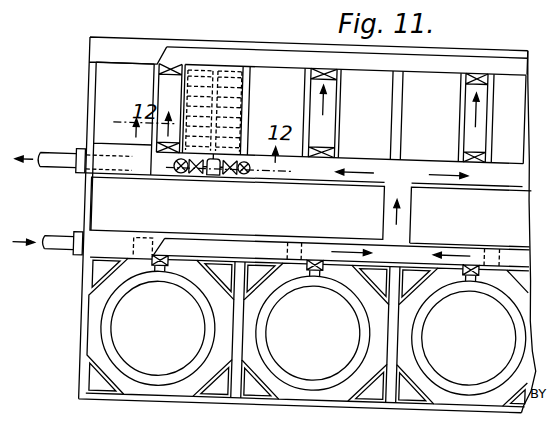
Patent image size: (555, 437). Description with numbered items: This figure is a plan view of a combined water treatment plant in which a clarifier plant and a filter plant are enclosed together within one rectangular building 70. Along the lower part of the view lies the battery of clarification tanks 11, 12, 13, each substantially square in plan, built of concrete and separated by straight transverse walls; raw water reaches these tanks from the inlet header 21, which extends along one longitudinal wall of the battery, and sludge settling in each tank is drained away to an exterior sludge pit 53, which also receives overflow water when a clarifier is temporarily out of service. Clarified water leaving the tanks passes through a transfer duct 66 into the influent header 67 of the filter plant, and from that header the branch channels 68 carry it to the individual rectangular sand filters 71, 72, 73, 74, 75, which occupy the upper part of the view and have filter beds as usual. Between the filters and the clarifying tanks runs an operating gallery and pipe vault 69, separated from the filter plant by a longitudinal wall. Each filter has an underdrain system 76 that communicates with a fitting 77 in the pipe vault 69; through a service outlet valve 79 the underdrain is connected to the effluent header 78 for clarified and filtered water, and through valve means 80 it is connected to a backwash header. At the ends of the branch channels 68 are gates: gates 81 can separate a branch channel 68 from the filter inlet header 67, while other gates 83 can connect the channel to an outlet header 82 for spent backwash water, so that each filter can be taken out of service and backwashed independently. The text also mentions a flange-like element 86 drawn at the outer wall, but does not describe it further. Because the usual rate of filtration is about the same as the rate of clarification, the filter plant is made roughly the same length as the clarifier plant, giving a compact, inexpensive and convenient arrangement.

The clarification tank 11 is at (158, 329).
The clarification tank 12 is at (313, 333).
The clarification tank 13 is at (469, 338).
The inlet header 21 is at (271, 260).
The sludge pit 53 is at (495, 236).
The transfer duct 66 is at (471, 217).
The influent header 67 is at (428, 195).
The branch channel 68 is at (398, 115).
The operating gallery and pipe vault 69 is at (147, 176).
The rectangular building 70 is at (292, 224).
The filter 71 is at (122, 147).
The filter 72 is at (216, 83).
The filter 73 is at (276, 112).
The filter 74 is at (365, 114).
The filter 75 is at (430, 116).
The underdrain system 76 is at (199, 81).
The fitting 77 is at (205, 180).
The effluent header 78 is at (74, 144).
The service outlet valve 79 is at (177, 182).
The valve means 80 is at (253, 182).
The gate 81 is at (236, 168).
The outlet header 82 is at (353, 10).
The gate 83 is at (321, 49).
The flange 86 is at (65, 171).